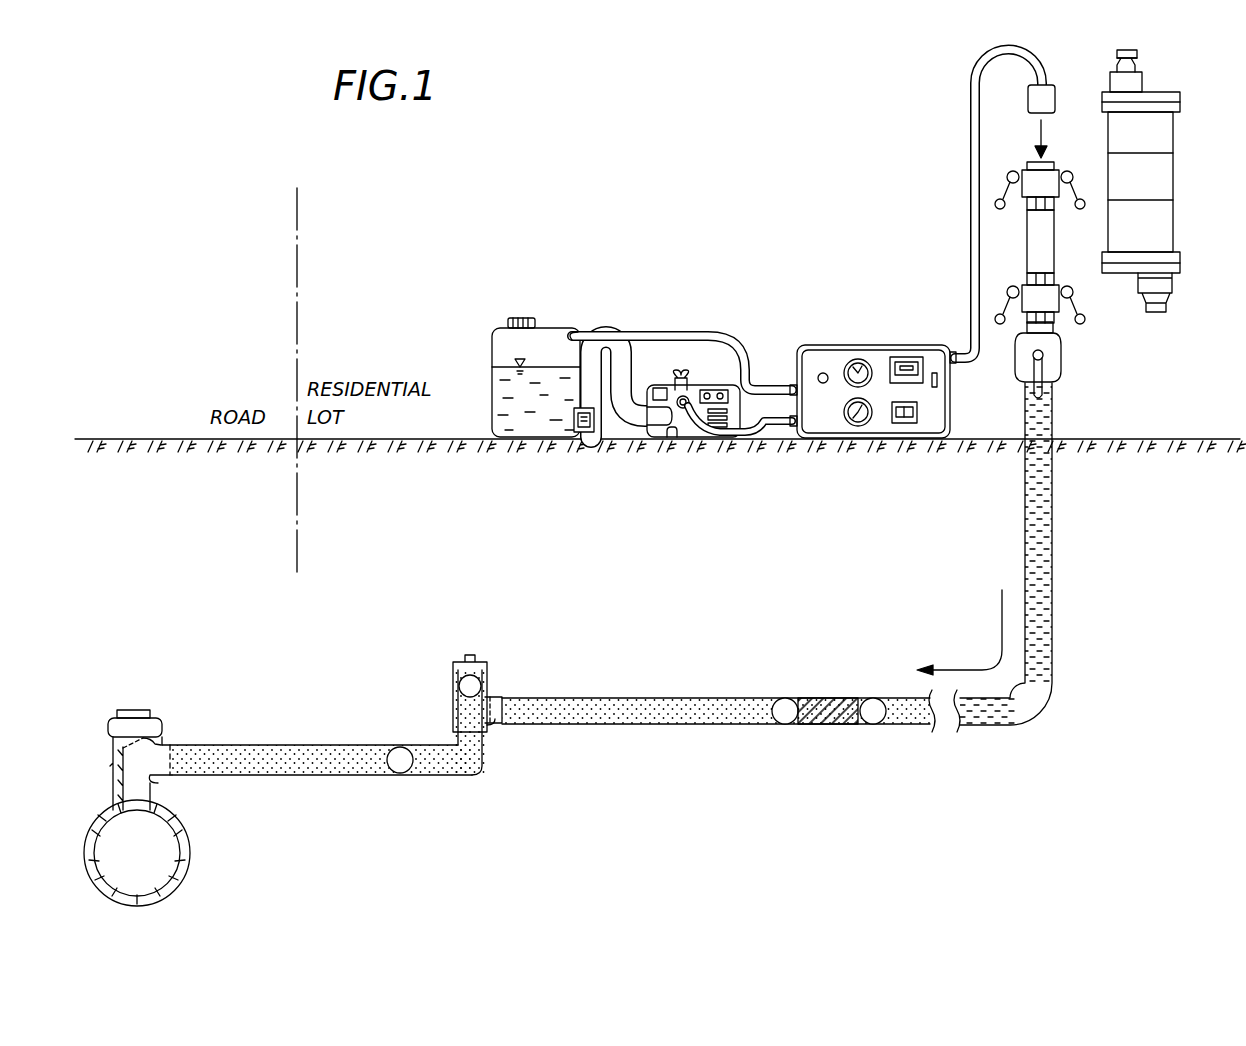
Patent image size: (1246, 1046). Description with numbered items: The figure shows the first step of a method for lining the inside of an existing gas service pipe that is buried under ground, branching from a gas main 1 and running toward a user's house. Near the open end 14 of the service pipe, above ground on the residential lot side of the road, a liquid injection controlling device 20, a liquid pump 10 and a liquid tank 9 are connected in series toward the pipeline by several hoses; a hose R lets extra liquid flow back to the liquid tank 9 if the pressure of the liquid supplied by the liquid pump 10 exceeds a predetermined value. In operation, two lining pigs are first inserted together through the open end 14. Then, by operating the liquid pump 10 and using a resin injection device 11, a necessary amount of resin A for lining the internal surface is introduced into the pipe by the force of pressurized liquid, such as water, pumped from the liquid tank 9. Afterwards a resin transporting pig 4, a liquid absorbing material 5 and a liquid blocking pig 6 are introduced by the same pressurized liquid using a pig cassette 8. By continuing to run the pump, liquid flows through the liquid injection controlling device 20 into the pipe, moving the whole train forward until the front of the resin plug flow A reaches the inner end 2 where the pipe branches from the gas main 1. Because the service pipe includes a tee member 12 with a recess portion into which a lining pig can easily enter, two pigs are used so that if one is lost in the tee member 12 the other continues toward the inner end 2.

The gas main 1 is at (192, 862).
The inner end 2 is at (175, 737).
The resin transporting pig 4 is at (783, 718).
The liquid absorbing material 5 is at (810, 699).
The liquid blocking pig 6 is at (875, 698).
The pig cassette 8 is at (1042, 248).
The liquid tank 9 is at (502, 337).
The liquid pump 10 is at (671, 432).
The resin injection device 11 is at (1162, 118).
The tee member 12 is at (488, 730).
The open end 14 is at (1052, 388).
The liquid injection controlling device 20 is at (883, 345).
The resin A is at (576, 705).
The hose R is at (707, 331).